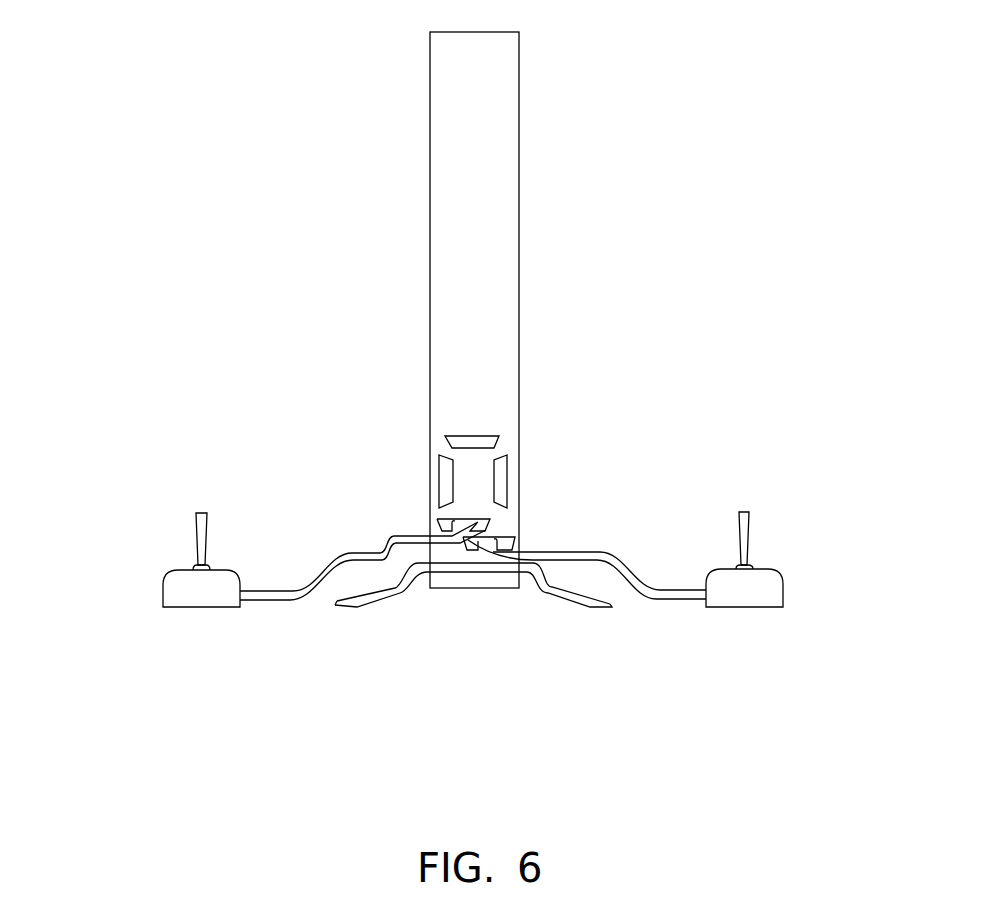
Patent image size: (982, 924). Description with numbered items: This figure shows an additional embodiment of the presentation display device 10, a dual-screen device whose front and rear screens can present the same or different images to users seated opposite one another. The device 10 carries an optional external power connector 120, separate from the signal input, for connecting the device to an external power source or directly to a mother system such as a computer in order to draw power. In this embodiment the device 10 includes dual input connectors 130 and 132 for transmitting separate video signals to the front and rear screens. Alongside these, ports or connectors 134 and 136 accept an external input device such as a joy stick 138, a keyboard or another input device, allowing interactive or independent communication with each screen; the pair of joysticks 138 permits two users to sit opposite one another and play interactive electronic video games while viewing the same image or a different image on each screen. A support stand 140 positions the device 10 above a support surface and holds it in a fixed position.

The presentation display device 10 is at (607, 105).
The external power connector 120 is at (468, 437).
The dual input connector 130 is at (438, 455).
The dual input connector 132 is at (507, 455).
The port or connector 134 is at (440, 523).
The port or connector 136 is at (505, 535).
The joy stick 138 is at (175, 568).
The support stand 140 is at (577, 603).